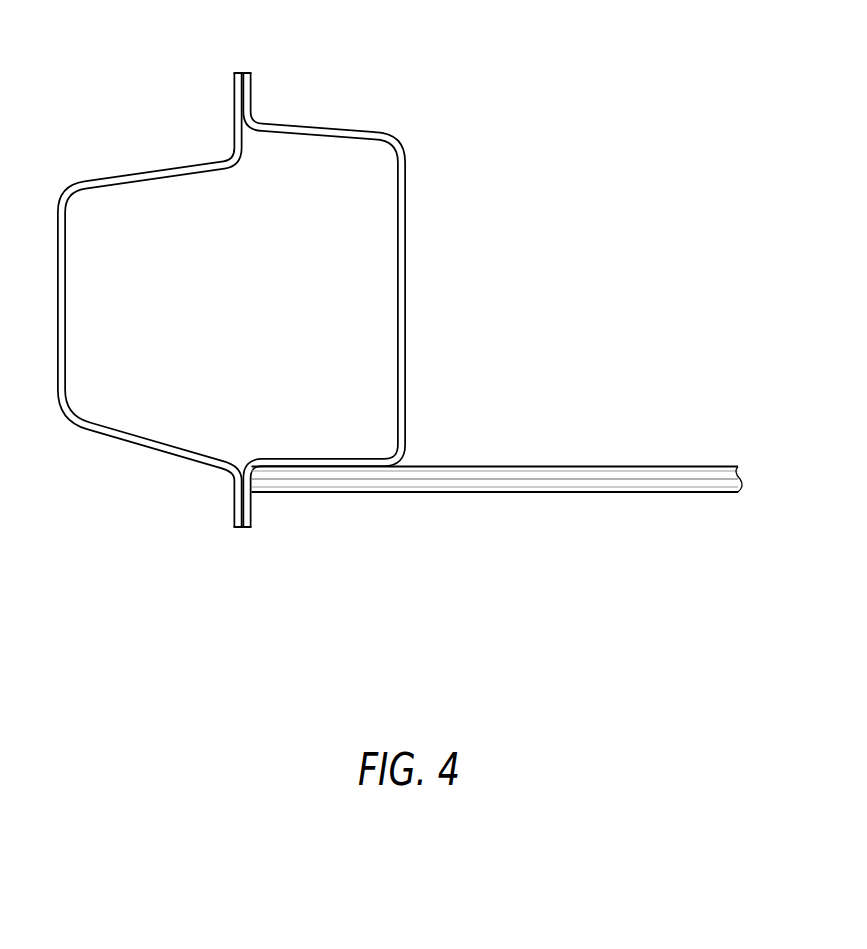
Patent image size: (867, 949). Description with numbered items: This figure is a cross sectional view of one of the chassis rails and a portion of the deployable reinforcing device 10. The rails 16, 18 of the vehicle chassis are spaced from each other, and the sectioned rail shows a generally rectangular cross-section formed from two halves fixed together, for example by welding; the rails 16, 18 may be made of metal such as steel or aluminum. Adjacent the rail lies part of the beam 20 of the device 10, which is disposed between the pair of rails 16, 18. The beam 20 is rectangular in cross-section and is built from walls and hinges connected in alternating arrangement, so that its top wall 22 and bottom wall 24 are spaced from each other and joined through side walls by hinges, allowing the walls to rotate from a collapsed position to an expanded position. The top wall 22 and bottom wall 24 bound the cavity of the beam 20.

The deployable reinforcing device 10 is at (402, 273).
The rail 16 is at (235, 268).
The rail 18 is at (303, 82).
The beam 20 is at (497, 466).
The top wall 22 is at (438, 465).
The bottom wall 24 is at (535, 492).